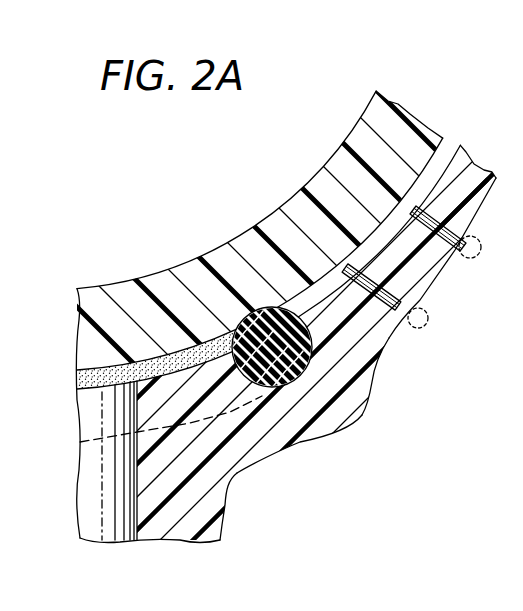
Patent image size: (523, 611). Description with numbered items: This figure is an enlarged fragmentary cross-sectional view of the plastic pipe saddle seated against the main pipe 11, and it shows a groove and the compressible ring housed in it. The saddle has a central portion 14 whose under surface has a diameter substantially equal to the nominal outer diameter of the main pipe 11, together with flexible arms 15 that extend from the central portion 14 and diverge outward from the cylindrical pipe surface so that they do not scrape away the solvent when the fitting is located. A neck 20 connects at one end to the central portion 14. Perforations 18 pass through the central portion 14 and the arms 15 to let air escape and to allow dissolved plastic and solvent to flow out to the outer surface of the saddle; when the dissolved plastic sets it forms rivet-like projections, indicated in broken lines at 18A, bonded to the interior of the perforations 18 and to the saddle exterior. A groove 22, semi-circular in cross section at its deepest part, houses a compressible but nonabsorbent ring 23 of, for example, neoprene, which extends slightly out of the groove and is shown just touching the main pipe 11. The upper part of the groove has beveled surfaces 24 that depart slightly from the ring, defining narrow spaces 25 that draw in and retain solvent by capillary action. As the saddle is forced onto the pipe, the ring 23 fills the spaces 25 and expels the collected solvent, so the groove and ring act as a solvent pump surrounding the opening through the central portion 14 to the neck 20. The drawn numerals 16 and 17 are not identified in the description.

The main pipe 11 is at (359, 143).
The central portion 14 is at (262, 430).
The flexible arms 15 is at (491, 145).
The outer wall 16 is at (487, 183).
The direction arrow 17 is at (516, 69).
The perforations 18 is at (483, 238).
The rivet-like projections 18A is at (462, 257).
The neck 20 is at (218, 535).
The groove 22 is at (303, 400).
The compressible ring 23 is at (322, 398).
The beveled surfaces 24 is at (214, 356).
The narrow spaces 25 is at (236, 332).